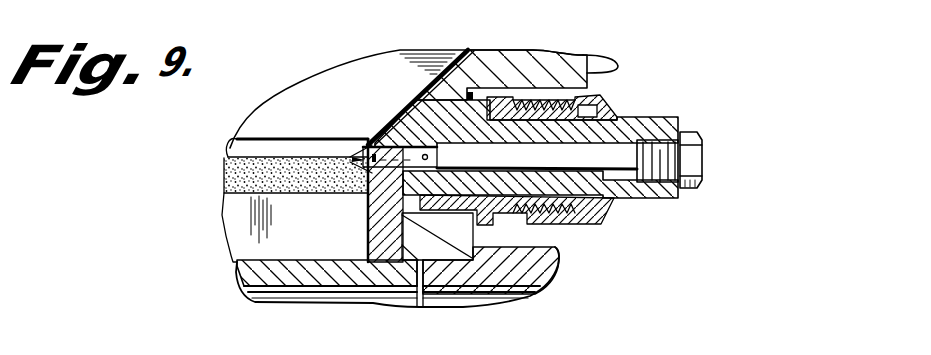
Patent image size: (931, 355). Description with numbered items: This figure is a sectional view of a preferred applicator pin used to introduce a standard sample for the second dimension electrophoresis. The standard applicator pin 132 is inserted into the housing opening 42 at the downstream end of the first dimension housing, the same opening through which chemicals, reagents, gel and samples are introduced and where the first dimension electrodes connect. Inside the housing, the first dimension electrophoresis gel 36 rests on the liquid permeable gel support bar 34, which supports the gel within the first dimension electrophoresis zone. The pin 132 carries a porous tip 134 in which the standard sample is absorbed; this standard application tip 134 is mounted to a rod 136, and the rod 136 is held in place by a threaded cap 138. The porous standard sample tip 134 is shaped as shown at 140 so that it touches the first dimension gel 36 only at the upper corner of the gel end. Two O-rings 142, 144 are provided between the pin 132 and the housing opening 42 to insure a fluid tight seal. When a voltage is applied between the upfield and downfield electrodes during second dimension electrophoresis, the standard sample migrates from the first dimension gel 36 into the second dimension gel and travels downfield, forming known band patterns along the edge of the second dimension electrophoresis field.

The liquid permeable gel support bar 34 is at (236, 176).
The first dimension electrophoresis gel 36 is at (236, 130).
The opening 42 is at (426, 146).
The standard applicator pin 132 is at (625, 117).
The porous tip 134 is at (434, 158).
The rod 136 is at (622, 160).
The threaded cap 138 is at (700, 160).
The tip shape 140 is at (352, 166).
The O-ring 142 is at (404, 180).
The O-ring 144 is at (478, 97).